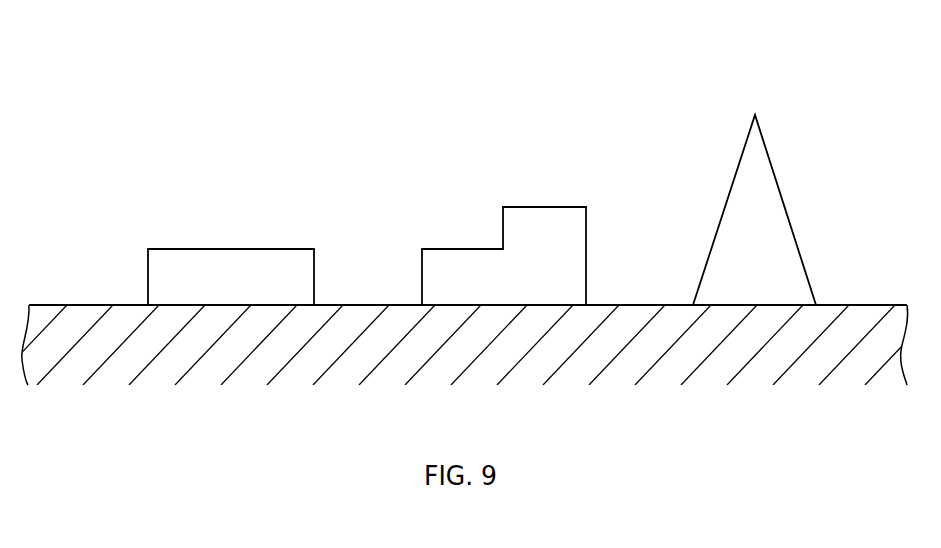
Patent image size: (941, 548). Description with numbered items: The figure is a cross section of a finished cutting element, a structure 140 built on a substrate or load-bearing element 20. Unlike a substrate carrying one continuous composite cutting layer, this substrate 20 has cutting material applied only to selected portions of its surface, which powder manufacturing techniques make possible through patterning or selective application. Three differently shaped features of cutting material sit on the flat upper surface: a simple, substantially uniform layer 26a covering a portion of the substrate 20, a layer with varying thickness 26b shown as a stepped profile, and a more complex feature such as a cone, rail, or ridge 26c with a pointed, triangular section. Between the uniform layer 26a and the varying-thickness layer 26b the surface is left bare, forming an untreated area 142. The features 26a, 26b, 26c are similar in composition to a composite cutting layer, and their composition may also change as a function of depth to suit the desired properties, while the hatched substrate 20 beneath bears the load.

The structure 140 is at (325, 63).
The substrate 20 is at (167, 368).
The untreated area 142 is at (380, 305).
The substantially uniform layer 26a is at (213, 263).
The layer with varying thickness 26b is at (537, 217).
The cone, rail, or ridge 26c is at (747, 192).